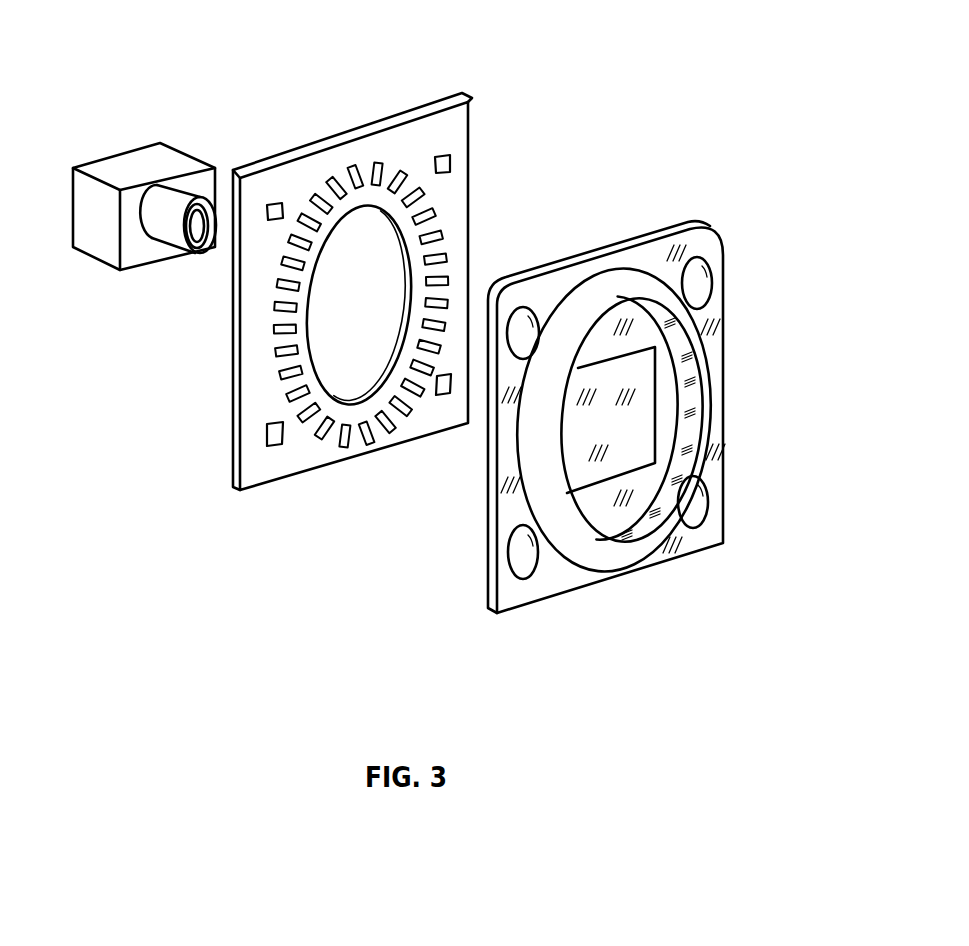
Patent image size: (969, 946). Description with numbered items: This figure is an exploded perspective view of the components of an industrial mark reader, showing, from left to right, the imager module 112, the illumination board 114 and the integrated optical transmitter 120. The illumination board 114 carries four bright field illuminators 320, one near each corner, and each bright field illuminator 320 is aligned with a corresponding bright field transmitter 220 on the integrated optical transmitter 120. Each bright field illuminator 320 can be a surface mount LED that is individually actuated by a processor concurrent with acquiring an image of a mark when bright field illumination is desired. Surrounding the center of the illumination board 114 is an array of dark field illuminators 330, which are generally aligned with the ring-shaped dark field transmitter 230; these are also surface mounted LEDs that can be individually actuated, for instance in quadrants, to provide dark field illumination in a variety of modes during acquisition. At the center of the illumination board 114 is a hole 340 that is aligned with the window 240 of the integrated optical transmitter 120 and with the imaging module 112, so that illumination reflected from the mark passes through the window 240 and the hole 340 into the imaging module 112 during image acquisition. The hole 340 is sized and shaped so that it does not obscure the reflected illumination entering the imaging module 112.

The imager module 112 is at (223, 123).
The illumination board 114 is at (505, 76).
The integrated optical transmitter 120 is at (730, 189).
The bright field transmitter 220 is at (513, 287).
The dark field transmitter 230 is at (593, 558).
The window 240 is at (657, 403).
The bright field illuminator 320 is at (275, 203).
The dark field illuminators 330 is at (437, 228).
The hole 340 is at (312, 310).